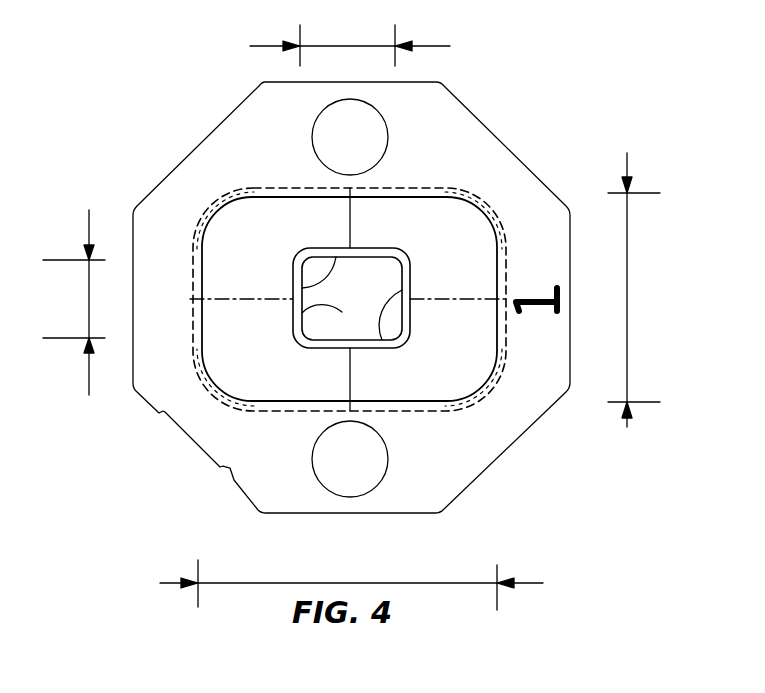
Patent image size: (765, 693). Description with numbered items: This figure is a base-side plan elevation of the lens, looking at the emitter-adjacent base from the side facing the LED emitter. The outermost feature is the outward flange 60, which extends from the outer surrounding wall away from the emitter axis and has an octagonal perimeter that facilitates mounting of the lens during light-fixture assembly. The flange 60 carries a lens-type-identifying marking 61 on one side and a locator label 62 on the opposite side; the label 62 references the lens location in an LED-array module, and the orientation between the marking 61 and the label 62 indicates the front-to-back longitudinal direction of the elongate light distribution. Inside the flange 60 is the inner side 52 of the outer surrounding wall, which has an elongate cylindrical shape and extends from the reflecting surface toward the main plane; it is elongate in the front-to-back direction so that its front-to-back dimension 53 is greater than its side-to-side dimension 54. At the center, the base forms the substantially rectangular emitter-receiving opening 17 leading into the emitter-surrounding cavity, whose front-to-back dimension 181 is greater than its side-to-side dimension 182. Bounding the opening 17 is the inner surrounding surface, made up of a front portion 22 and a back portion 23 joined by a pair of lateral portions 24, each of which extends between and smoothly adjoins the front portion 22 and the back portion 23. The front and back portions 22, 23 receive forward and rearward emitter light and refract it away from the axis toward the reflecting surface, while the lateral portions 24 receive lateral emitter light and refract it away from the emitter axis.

The outward flange 60 is at (462, 118).
The lens-type-identifying marking 61 is at (165, 290).
The locator label 62 is at (533, 305).
The emitter-receiving opening 17 is at (377, 267).
The lateral portions 24 is at (302, 286).
The front portion 22 is at (342, 312).
The back portion 23 is at (382, 340).
The inner side of outer surrounding wall 52 is at (202, 310).
The inner-side front-to-back dimension 53 is at (253, 583).
The side-to-side dimension 54 is at (640, 290).
The front-to-back dimension 181 is at (350, 40).
The side-to-side dimension 182 is at (70, 302).